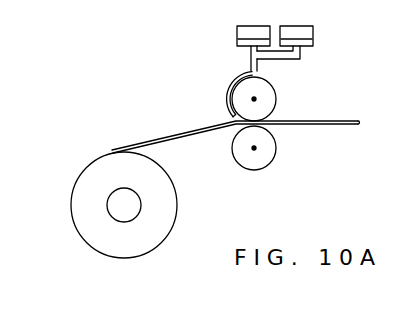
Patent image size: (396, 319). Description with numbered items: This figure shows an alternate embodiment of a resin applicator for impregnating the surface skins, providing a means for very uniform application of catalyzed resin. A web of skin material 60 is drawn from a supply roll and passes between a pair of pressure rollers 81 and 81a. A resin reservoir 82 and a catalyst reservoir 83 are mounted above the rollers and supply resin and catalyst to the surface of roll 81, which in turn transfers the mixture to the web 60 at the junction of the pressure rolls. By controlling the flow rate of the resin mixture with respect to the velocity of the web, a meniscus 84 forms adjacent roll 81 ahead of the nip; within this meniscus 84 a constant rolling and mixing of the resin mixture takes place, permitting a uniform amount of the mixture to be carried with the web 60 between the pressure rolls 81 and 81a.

The web of skin material 60 is at (182, 133).
The pressure roller 81 is at (268, 107).
The pressure roller 81a is at (268, 145).
The resin reservoir 82 is at (237, 46).
The catalyst reservoir 83 is at (313, 45).
The meniscus 84 is at (231, 121).